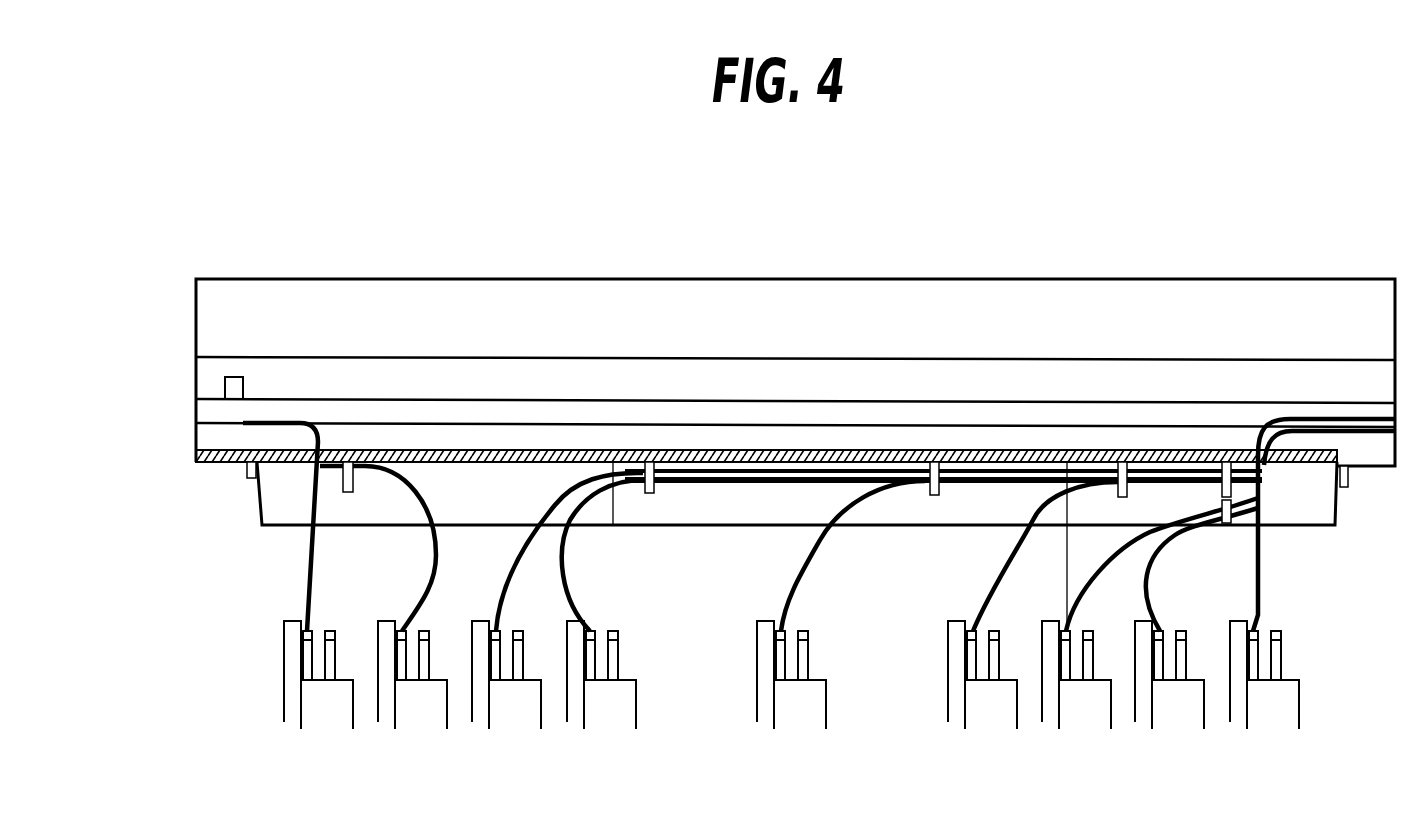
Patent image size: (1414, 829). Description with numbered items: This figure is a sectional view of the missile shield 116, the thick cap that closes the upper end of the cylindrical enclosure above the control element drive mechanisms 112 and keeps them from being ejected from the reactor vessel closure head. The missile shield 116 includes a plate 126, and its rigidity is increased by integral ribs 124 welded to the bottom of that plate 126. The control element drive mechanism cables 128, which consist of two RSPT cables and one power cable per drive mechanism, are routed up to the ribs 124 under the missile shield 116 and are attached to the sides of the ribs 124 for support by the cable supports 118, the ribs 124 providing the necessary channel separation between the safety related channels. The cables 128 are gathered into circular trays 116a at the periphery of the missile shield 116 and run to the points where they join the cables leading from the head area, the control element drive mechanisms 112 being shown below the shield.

The control element drive mechanisms 112 is at (420, 710).
The missile shield 116 is at (723, 280).
The circular trays 116a is at (217, 414).
The cable supports 118 is at (649, 493).
The integral ribs 124 is at (285, 498).
The plate 126 is at (197, 452).
The control element drive mechanism cables 128 is at (978, 592).